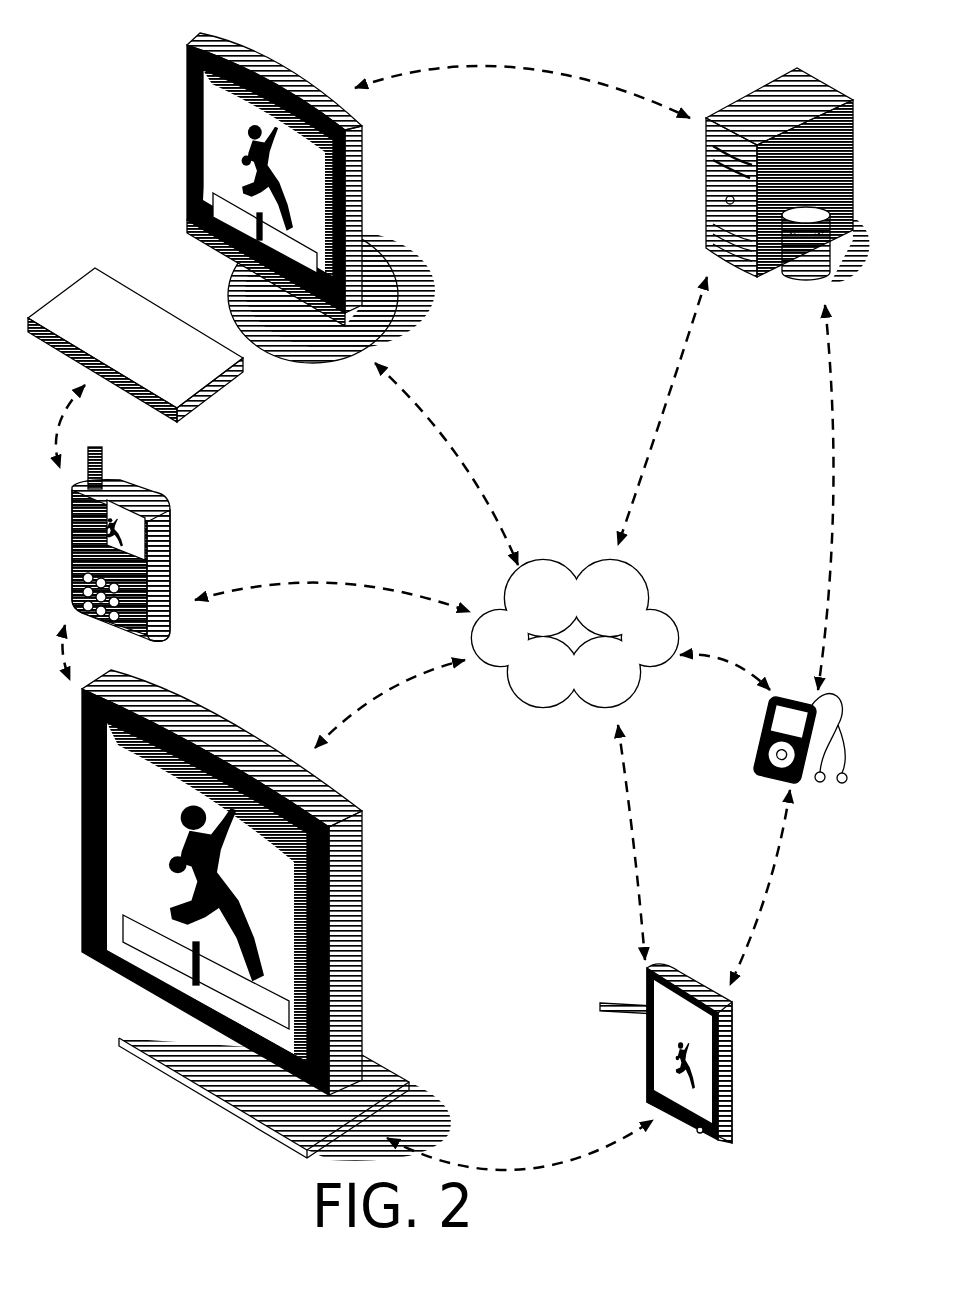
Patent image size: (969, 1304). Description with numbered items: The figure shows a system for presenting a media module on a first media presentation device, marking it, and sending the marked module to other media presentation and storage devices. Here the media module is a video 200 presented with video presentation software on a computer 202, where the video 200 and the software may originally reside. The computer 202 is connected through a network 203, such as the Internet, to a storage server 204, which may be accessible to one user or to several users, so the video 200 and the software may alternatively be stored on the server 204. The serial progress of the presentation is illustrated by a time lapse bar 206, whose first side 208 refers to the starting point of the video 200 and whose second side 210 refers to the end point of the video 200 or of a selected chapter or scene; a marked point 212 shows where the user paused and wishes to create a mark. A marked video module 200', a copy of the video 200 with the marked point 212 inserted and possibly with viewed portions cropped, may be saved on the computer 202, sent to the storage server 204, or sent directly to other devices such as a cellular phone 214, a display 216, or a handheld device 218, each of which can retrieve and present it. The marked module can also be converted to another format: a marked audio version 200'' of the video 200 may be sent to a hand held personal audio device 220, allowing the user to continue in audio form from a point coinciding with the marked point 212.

The video 200 is at (333, 178).
The marked video module 200' is at (458, 800).
The marked audio version 200'' is at (733, 757).
The computer 202 is at (283, 63).
The network 203 is at (595, 663).
The storage server 204 is at (763, 85).
The time lapse bar 206 is at (187, 167).
The first side 208 is at (213, 203).
The second side 210 is at (340, 273).
The marked point 212 is at (232, 255).
The cellular phone 214 is at (155, 498).
The display 216 is at (352, 803).
The handheld device 218 is at (732, 1023).
The hand held personal audio device 220 is at (787, 697).